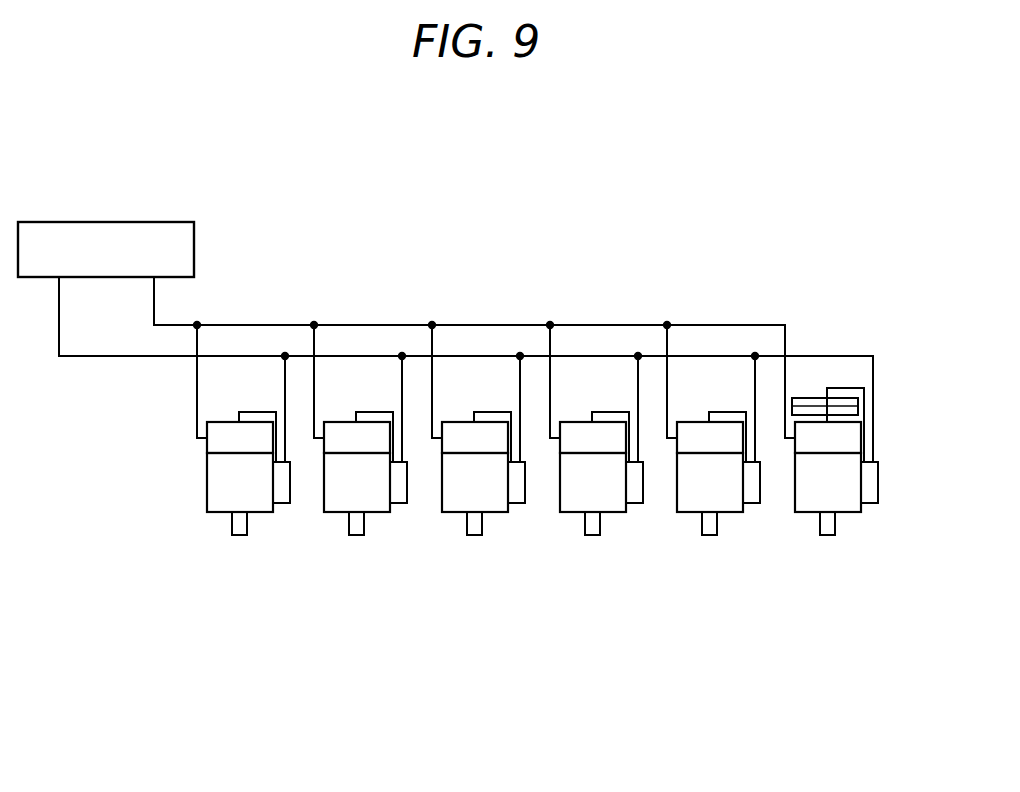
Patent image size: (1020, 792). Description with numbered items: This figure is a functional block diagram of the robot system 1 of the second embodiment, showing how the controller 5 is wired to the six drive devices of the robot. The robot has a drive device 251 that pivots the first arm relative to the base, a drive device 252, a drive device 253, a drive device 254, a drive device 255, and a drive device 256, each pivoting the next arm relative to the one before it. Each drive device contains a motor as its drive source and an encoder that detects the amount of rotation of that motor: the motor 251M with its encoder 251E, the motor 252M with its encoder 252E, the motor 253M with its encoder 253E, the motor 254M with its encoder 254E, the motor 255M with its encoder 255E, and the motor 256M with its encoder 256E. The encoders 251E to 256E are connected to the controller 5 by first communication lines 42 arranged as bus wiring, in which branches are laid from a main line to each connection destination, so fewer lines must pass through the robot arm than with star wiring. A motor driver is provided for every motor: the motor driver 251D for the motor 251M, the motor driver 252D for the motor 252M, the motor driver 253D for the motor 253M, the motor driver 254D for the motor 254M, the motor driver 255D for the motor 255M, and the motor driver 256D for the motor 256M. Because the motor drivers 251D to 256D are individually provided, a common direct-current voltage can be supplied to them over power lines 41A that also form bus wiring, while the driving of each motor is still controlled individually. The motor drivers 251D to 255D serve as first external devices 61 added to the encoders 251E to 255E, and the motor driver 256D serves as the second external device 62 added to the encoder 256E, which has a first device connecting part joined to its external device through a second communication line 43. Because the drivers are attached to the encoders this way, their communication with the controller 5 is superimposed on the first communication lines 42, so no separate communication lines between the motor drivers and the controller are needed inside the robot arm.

The robot system 1 is at (800, 175).
The controller 5 is at (194, 248).
The first communication lines 42 is at (360, 323).
The power lines 41A is at (100, 357).
The second communication line 43 is at (255, 411).
The first external device 61 is at (851, 407).
The second external device 62 is at (836, 668).
The drive device 251 is at (234, 588).
The encoder 251E is at (222, 443).
The motor 251M is at (263, 500).
The motor driver 251D is at (280, 493).
The drive device 252 is at (351, 588).
The encoder 252E is at (339, 443).
The motor 252M is at (380, 500).
The motor driver 252D is at (397, 493).
The drive device 253 is at (469, 588).
The encoder 253E is at (457, 443).
The motor 253M is at (498, 500).
The motor driver 253D is at (515, 493).
The drive device 254 is at (587, 588).
The encoder 254E is at (575, 443).
The motor 254M is at (616, 500).
The motor driver 254D is at (633, 493).
The drive device 255 is at (704, 588).
The encoder 255E is at (692, 443).
The motor 255M is at (733, 500).
The motor driver 255D is at (750, 493).
The drive device 256 is at (822, 588).
The encoder 256E is at (810, 443).
The motor 256M is at (851, 500).
The motor driver 256D is at (863, 561).